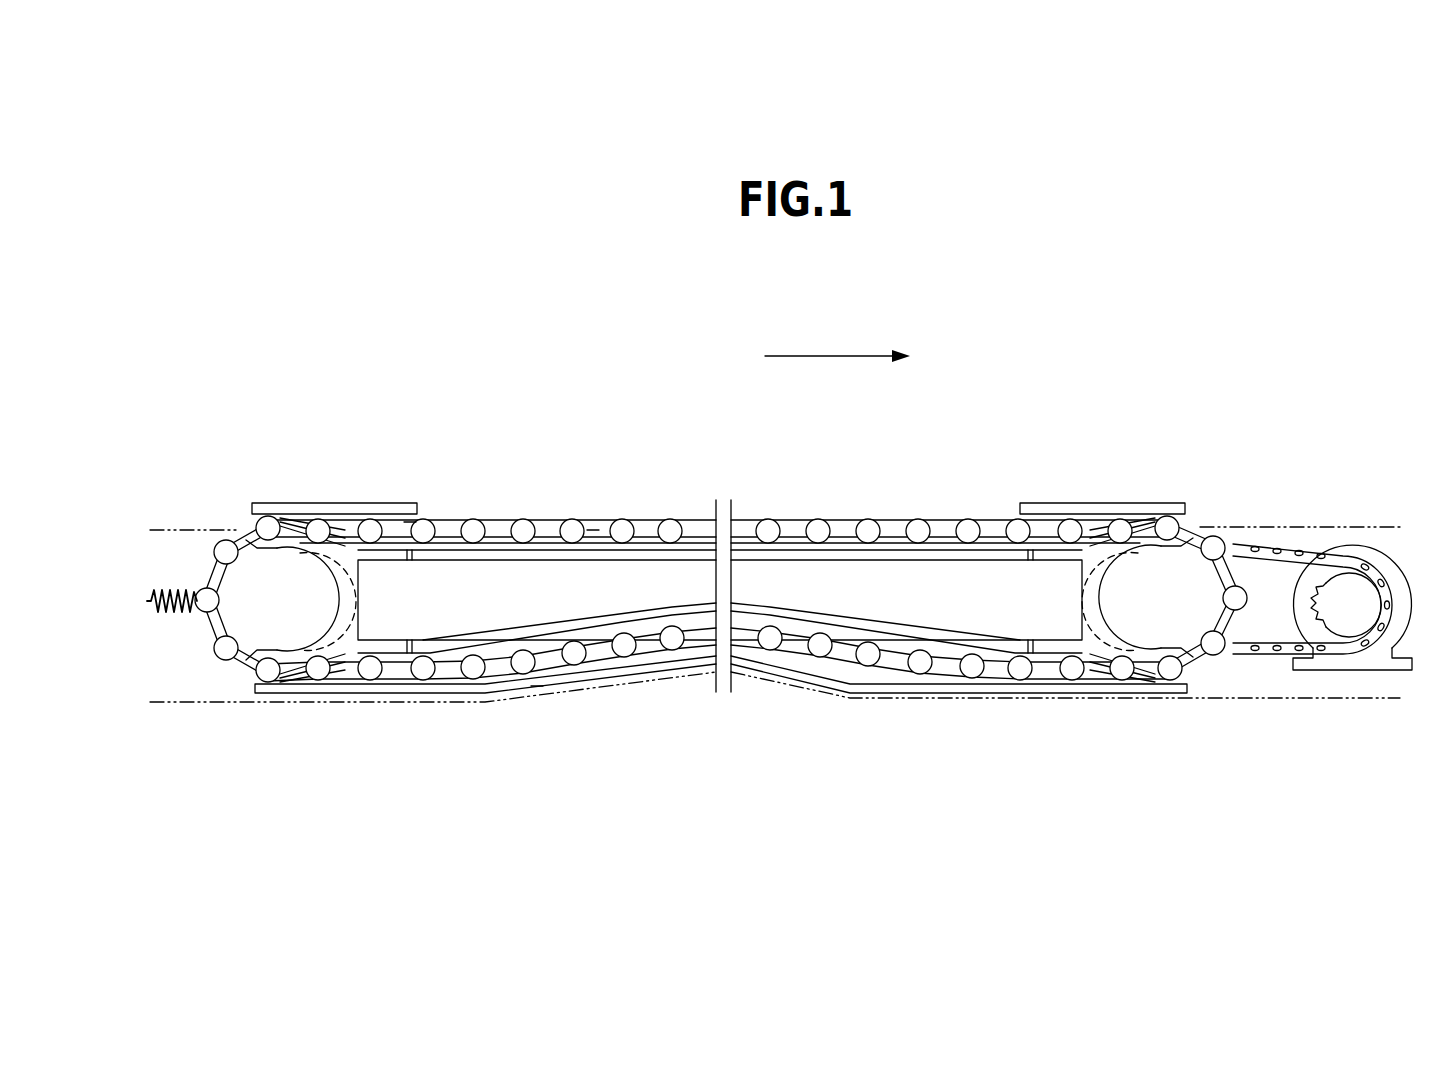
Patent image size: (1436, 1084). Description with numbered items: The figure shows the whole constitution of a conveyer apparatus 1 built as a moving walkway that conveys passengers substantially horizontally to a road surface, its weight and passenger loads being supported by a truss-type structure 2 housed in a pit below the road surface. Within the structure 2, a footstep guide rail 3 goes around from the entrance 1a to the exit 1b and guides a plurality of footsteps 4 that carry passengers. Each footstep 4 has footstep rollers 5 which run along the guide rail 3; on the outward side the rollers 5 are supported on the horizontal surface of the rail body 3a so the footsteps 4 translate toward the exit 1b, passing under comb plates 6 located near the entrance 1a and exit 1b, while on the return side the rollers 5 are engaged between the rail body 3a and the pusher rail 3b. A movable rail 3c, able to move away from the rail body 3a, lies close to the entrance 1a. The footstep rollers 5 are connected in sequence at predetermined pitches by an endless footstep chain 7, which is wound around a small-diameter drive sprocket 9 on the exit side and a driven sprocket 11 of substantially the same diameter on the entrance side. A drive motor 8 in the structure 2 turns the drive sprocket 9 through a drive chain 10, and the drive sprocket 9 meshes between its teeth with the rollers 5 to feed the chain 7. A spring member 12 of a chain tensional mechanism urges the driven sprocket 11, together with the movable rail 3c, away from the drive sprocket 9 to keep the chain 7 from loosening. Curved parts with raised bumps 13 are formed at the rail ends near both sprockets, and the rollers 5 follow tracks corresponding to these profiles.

The conveyer apparatus 1 is at (1023, 354).
The entrance 1a is at (228, 448).
The exit 1b is at (1224, 447).
The structure 2 is at (1290, 526).
The footstep guide rail 3 is at (593, 420).
The rail body 3a is at (593, 528).
The pusher rail 3b is at (537, 683).
The movable rail 3c is at (410, 520).
The footsteps 4 is at (792, 522).
The footstep rollers 5 is at (668, 528).
The comb plates 6 is at (385, 503).
The footstep chain 7 is at (742, 528).
The drive motor 8 is at (1362, 544).
The drive sprocket 9 is at (1190, 633).
The drive chain 10 is at (1282, 658).
The driven sprocket 11 is at (268, 635).
The spring member 12 is at (162, 618).
The raised bump 13 is at (277, 515).